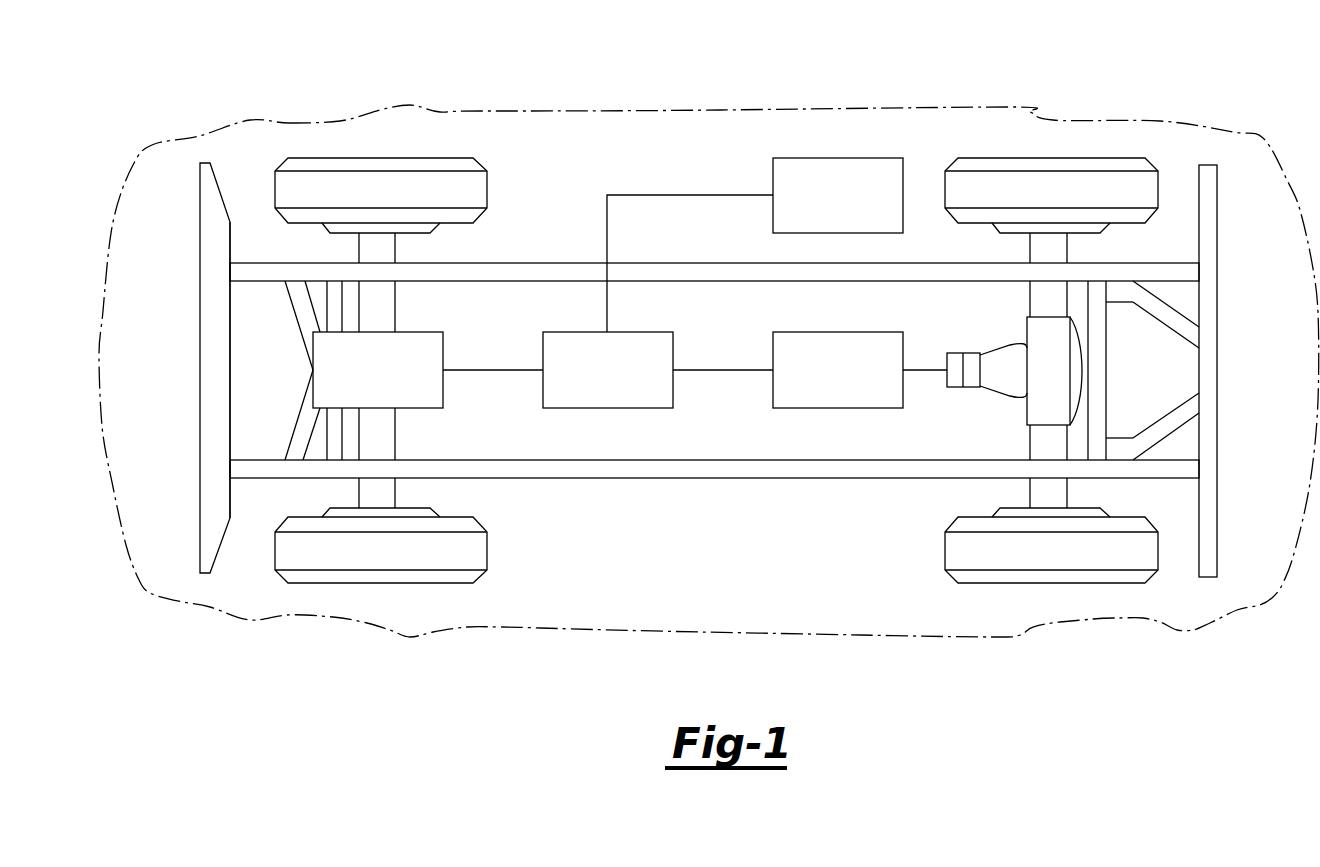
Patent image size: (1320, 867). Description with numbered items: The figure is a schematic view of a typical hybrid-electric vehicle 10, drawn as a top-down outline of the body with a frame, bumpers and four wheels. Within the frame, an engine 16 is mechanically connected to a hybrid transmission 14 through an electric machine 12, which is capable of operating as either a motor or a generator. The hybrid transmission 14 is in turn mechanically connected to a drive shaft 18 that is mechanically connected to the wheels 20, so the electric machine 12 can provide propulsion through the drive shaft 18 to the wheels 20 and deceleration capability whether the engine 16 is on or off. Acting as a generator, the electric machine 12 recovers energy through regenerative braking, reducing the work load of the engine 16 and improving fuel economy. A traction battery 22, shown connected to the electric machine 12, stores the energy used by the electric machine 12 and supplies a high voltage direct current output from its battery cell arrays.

The hybrid-electric vehicle 10 is at (1230, 67).
The electric machine 12 is at (636, 408).
The hybrid transmission 14 is at (866, 408).
The engine 16 is at (403, 408).
The drive shaft 18 is at (1040, 333).
The wheels 20 is at (945, 552).
The traction battery 22 is at (773, 172).